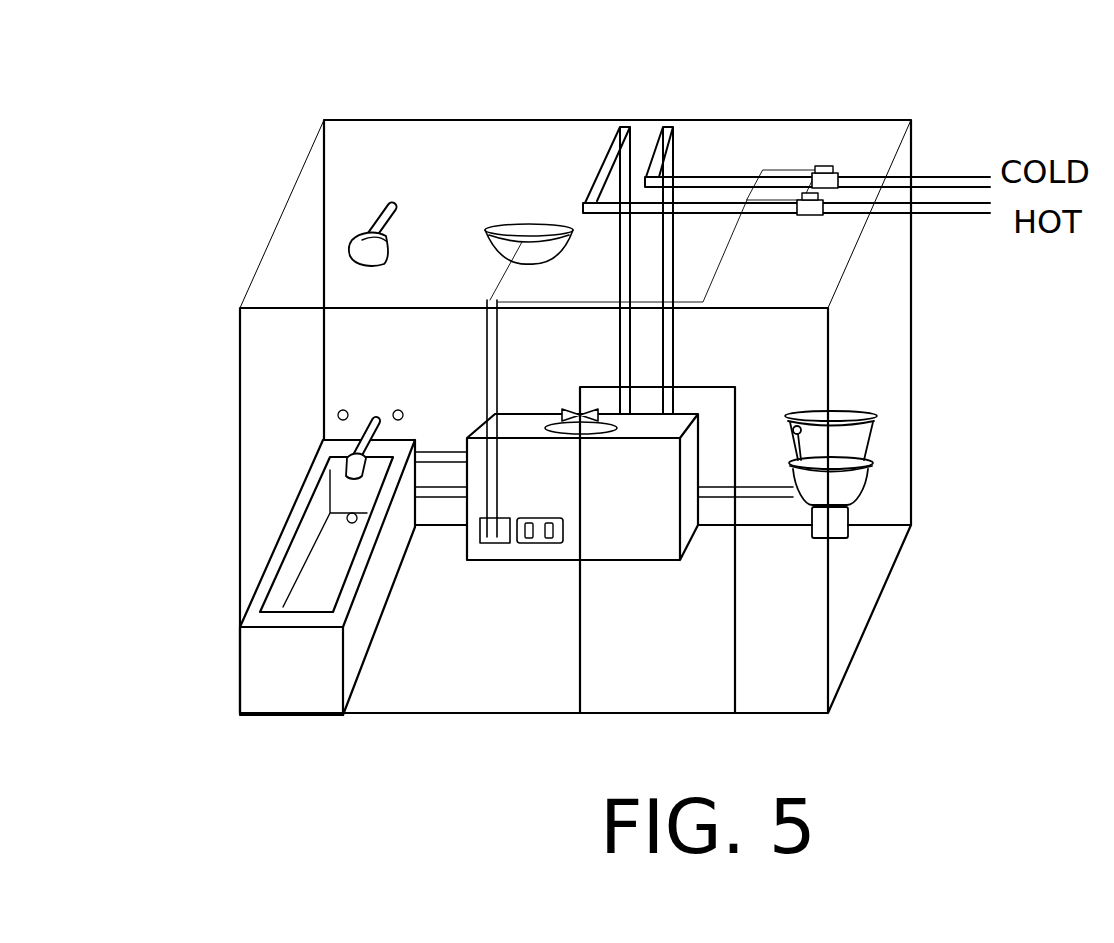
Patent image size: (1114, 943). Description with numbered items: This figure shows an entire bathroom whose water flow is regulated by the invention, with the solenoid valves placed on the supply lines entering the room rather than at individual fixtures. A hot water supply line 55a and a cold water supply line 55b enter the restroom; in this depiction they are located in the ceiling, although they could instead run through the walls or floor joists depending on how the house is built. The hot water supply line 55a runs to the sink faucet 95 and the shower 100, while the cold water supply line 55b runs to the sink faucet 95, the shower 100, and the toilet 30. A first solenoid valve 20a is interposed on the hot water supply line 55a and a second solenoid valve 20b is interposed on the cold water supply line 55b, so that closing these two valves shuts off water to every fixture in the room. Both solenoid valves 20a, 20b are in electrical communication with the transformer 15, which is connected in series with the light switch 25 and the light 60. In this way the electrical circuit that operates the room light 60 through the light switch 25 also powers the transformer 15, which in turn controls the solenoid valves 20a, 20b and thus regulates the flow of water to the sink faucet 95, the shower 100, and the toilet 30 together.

The shower 100 is at (352, 253).
The light 60 is at (538, 233).
The second solenoid valve 20b is at (828, 183).
The first solenoid valve 20a is at (813, 210).
The cold water supply line 55b is at (963, 178).
The hot water supply line 55a is at (942, 212).
The sink faucet 95 is at (583, 417).
The toilet 30 is at (850, 442).
The transformer 15 is at (487, 540).
The light switch 25 is at (540, 540).